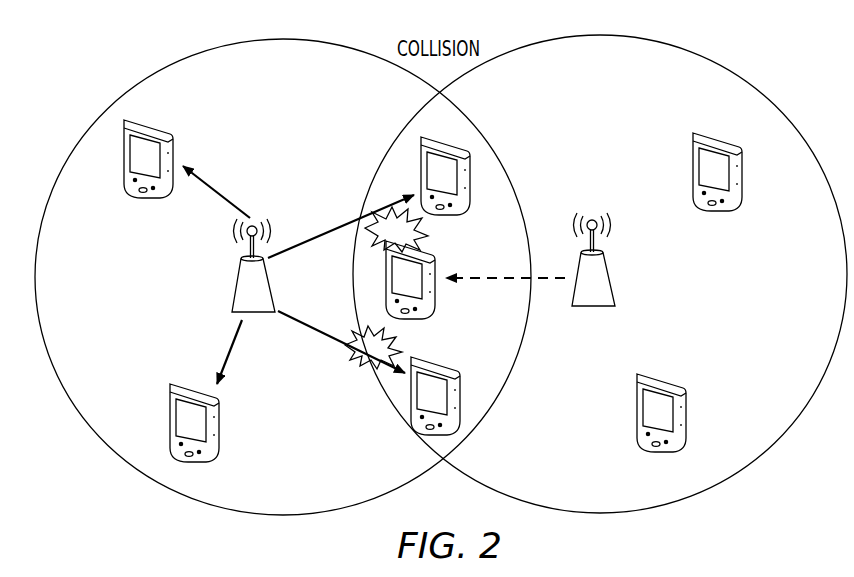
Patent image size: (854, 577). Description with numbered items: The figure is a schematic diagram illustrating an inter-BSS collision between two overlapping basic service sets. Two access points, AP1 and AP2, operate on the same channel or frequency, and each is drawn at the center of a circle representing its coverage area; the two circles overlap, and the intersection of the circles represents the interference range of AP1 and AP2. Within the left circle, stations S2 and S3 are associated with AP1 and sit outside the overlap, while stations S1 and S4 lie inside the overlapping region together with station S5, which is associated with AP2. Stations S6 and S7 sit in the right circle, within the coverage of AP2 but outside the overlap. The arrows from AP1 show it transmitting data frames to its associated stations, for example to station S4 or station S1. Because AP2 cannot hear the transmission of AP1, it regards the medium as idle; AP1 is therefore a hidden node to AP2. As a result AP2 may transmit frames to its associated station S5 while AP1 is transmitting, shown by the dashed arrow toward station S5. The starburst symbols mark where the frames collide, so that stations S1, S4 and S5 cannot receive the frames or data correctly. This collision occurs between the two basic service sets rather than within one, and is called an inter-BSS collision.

The station S1 is at (445, 164).
The station S2 is at (148, 173).
The station S3 is at (194, 410).
The station S4 is at (435, 385).
The station S5 is at (424, 279).
The station S6 is at (661, 428).
The station S7 is at (717, 160).
The access point AP1 is at (233, 265).
The access point AP2 is at (612, 259).